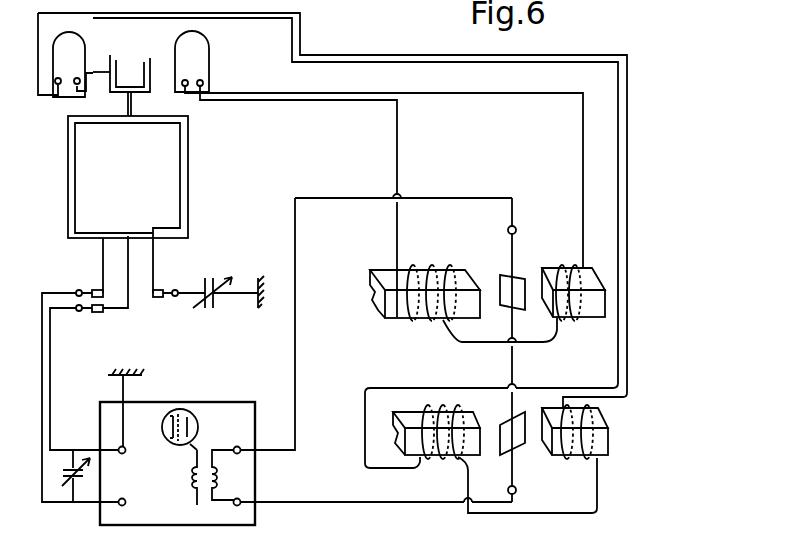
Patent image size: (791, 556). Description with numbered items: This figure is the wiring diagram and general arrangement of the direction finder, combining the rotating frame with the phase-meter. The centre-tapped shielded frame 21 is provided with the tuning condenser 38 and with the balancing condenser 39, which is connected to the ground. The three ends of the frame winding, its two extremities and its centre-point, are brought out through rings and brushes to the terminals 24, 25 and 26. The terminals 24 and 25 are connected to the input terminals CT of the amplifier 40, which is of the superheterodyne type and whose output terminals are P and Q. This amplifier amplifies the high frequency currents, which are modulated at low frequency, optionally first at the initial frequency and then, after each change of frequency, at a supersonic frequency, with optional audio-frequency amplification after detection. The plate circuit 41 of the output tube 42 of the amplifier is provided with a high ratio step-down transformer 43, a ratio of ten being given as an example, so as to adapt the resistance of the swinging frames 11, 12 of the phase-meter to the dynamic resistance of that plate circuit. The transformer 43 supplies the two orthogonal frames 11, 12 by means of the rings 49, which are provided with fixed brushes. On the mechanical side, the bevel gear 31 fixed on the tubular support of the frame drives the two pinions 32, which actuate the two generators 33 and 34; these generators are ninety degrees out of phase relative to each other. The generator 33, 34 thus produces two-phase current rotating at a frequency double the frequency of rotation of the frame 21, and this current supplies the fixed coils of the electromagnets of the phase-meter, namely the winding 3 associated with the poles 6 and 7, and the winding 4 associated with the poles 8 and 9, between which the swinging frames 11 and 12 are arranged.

The winding 3 is at (413, 263).
The winding 4 is at (443, 410).
The pole 6 is at (467, 278).
The pole 7 is at (557, 262).
The pole 8 is at (472, 423).
The pole 9 is at (550, 413).
The frame 11 is at (517, 270).
The frame 12 is at (522, 448).
The shielded frame 21 is at (188, 153).
The terminal 24 is at (77, 291).
The terminal 25 is at (82, 311).
The terminal 26 is at (177, 291).
The bevel gear 31 is at (136, 93).
The pinion 32 is at (114, 62).
The generator 33 is at (192, 61).
The generator 34 is at (69, 64).
The tuning condenser 38 is at (66, 476).
The balancing condenser 39 is at (215, 298).
The amplifier 40 is at (177, 447).
The plate circuit 41 is at (197, 423).
The output tube 42 is at (162, 425).
The step-down transformer 43 is at (216, 483).
The ring 49 is at (507, 229).